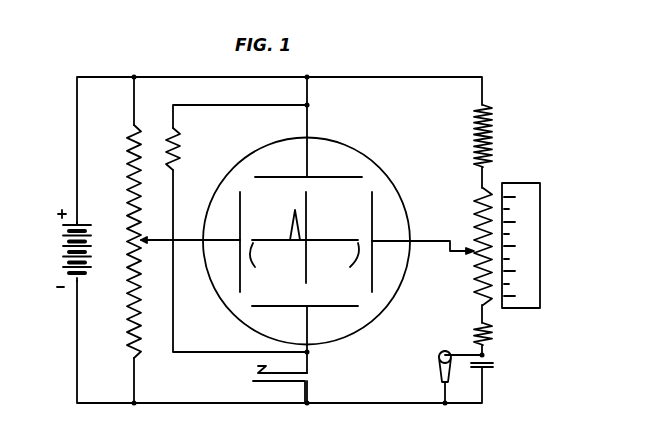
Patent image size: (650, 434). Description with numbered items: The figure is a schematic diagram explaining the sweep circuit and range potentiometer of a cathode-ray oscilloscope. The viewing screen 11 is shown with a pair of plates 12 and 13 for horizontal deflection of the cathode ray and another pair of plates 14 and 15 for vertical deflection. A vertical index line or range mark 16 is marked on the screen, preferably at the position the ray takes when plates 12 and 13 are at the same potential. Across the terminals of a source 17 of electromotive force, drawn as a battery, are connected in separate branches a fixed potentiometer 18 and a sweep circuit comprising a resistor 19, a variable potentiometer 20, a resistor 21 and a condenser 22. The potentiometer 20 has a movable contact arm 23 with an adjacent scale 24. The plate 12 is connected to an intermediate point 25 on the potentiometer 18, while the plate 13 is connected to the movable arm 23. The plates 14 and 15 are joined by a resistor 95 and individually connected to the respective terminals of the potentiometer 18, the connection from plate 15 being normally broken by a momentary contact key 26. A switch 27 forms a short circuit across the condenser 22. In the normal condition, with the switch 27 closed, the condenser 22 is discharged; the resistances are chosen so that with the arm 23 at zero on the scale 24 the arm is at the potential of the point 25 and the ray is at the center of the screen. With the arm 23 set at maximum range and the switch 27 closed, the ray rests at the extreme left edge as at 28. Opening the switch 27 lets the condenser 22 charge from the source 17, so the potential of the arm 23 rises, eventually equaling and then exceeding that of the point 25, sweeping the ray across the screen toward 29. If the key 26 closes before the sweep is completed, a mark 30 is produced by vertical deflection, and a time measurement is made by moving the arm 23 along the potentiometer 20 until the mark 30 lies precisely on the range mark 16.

The viewing screen 11 is at (329, 141).
The horizontal deflection plate 12 is at (239, 200).
The horizontal deflection plate 13 is at (373, 208).
The vertical deflection plate 14 is at (272, 176).
The vertical deflection plate 15 is at (338, 308).
The range mark 16 is at (309, 213).
The source of electromotive force 17 is at (68, 248).
The fixed potentiometer 18 is at (129, 184).
The resistor 19 is at (493, 133).
The variable potentiometer 20 is at (472, 263).
The resistor 21 is at (494, 331).
The condenser 22 is at (494, 366).
The movable contact arm 23 is at (463, 250).
The scale 24 is at (540, 247).
The intermediate point 25 is at (142, 239).
The momentary contact key 26 is at (257, 373).
The switch 27 is at (435, 362).
The left edge position 28 is at (263, 264).
The sweep end position 29 is at (343, 264).
The mark 30 is at (293, 223).
The resistor 95 is at (182, 152).